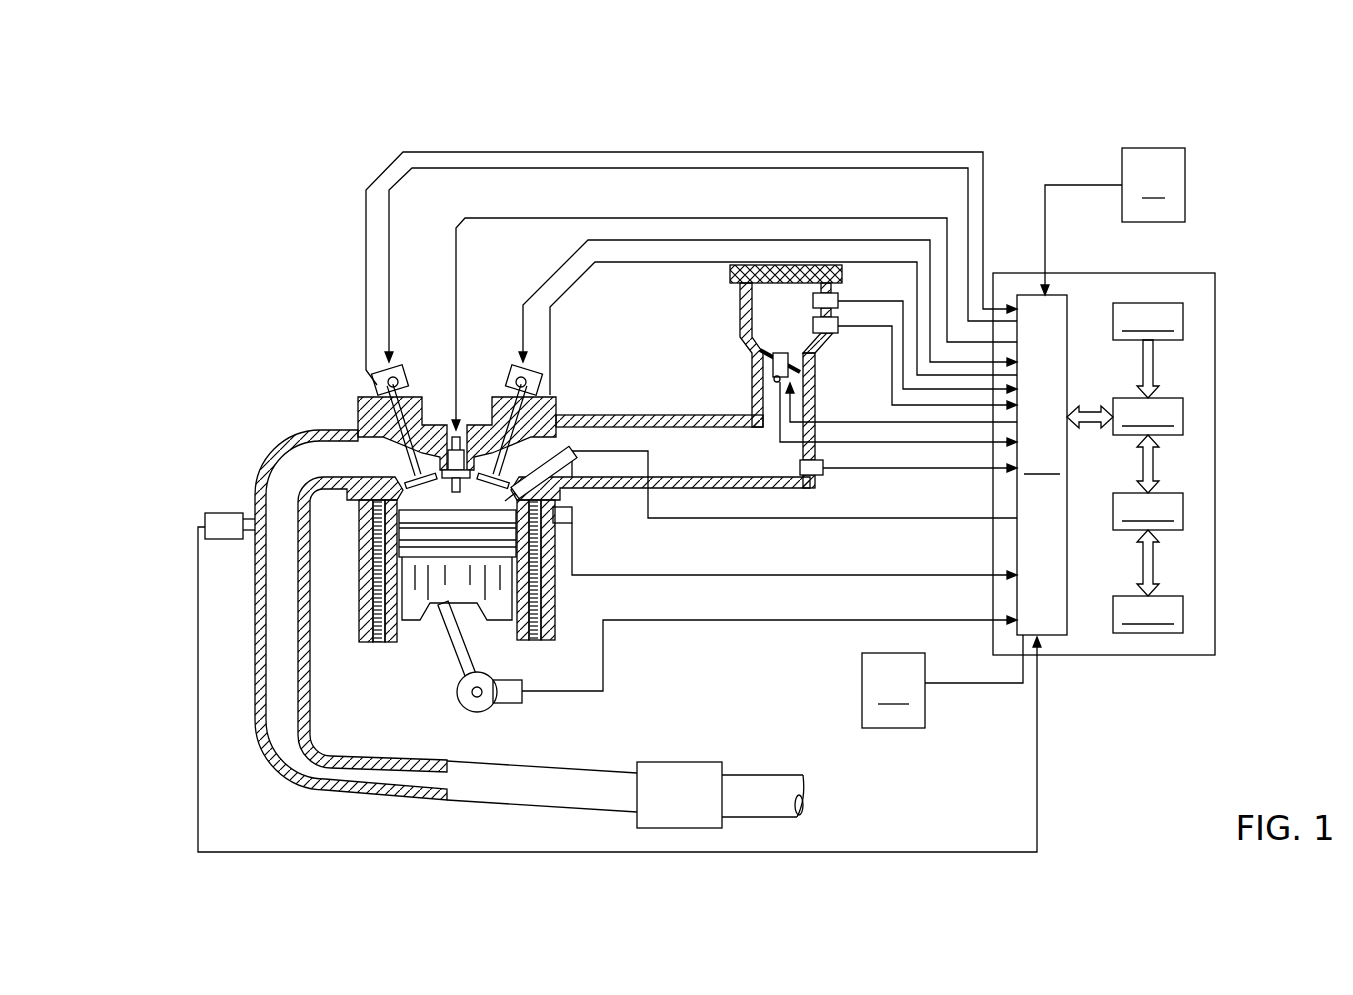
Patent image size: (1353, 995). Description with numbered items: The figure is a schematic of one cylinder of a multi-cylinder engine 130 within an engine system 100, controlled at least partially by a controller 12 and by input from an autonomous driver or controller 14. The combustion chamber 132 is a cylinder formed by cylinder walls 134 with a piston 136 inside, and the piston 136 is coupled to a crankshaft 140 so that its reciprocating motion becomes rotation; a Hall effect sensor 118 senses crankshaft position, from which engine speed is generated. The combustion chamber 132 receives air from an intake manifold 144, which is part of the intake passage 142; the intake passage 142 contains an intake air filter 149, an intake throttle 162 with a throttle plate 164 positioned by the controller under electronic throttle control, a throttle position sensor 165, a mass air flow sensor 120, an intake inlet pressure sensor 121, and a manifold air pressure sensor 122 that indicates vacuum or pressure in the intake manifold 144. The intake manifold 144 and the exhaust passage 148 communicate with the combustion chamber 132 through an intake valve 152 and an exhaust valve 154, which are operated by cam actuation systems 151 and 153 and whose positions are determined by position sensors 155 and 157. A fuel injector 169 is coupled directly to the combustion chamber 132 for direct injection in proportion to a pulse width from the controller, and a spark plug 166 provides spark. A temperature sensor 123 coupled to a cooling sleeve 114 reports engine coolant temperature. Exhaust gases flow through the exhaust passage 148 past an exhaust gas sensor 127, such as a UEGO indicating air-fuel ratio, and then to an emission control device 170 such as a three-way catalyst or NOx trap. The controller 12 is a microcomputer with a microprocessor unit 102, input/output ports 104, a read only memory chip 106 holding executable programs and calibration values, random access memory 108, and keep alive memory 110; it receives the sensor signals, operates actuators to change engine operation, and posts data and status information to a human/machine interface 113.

The engine system 100 is at (1250, 78).
The controller 12 is at (1215, 278).
The autonomous driver or controller 14 is at (1113, 221).
The input/output ports 104 is at (1068, 302).
The read only memory chip 106 is at (1183, 320).
The microprocessor unit 102 is at (1183, 412).
The random access memory 108 is at (1183, 507).
The keep alive memory 110 is at (1183, 608).
The human/machine interface 113 is at (942, 681).
The engine 130 is at (294, 352).
The combustion chamber 132 is at (430, 498).
The cylinder walls 134 is at (397, 645).
The piston 136 is at (440, 600).
The crankshaft 140 is at (468, 710).
The Hall effect sensor 118 is at (515, 705).
The cooling sleeve 114 is at (547, 640).
The exhaust gas sensor 127 is at (205, 515).
The exhaust passage 148 is at (314, 470).
The emission control device 170 is at (625, 794).
The cam actuation system 153 is at (403, 368).
The cam actuation system 151 is at (518, 368).
The exhaust valve 154 is at (395, 432).
The position sensor 155 is at (540, 388).
The position sensor 157 is at (380, 388).
The spark plug 166 is at (457, 433).
The intake valve 152 is at (545, 470).
The fuel injector 169 is at (560, 494).
The temperature sensor 123 is at (566, 523).
The intake manifold 144 is at (688, 460).
The intake passage 142 is at (710, 323).
The intake air filter 149 is at (730, 273).
The mass air flow sensor 120 is at (838, 297).
The intake inlet pressure sensor 121 is at (838, 332).
The manifold air pressure sensor 122 is at (820, 477).
The throttle plate 164 is at (755, 352).
The intake throttle 162 is at (798, 360).
The throttle position sensor 165 is at (773, 377).